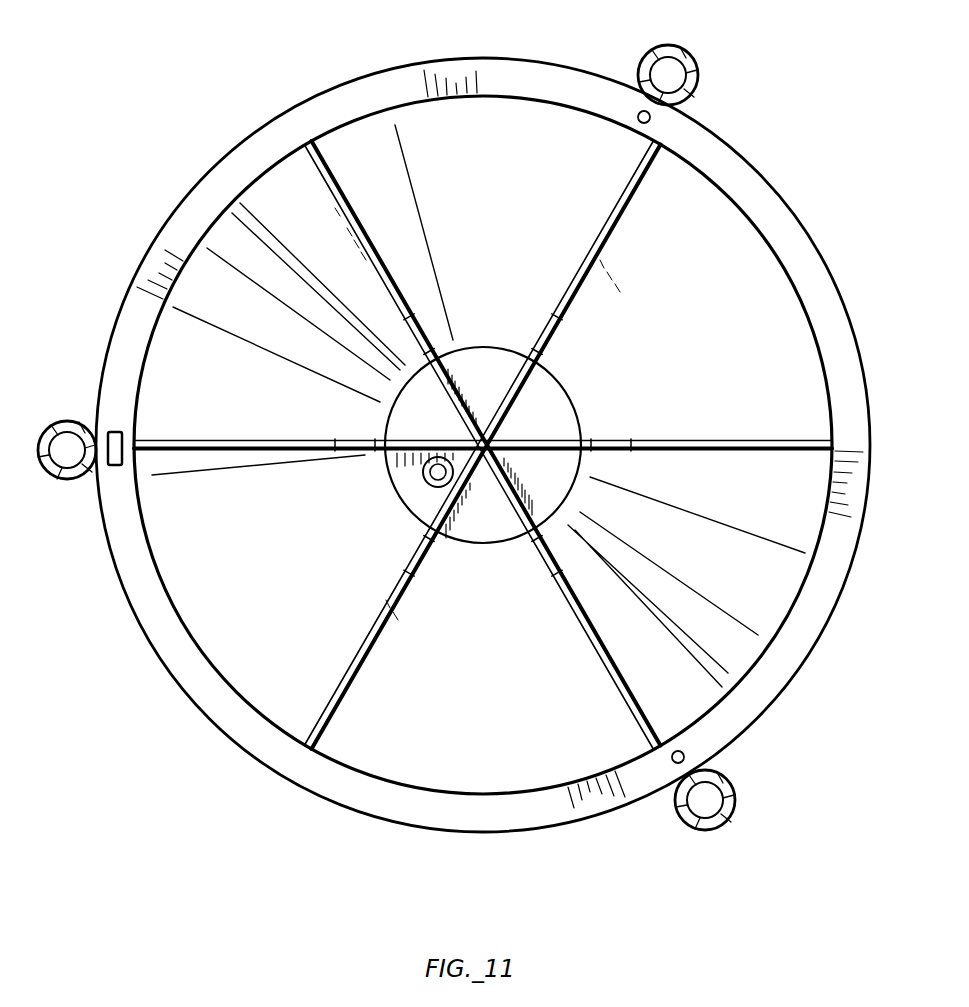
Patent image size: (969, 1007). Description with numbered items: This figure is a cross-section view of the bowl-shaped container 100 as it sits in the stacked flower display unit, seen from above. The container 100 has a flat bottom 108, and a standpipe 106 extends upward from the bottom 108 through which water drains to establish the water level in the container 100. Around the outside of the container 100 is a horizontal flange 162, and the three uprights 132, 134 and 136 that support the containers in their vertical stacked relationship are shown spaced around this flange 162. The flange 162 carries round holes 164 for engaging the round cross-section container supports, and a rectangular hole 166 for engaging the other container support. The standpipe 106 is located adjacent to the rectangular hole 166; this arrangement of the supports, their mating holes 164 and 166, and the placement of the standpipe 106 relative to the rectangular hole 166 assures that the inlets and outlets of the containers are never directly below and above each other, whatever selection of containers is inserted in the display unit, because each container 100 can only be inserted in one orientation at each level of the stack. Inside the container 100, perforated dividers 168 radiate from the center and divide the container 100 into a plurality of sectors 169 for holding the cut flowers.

The container 100 is at (263, 770).
The standpipe 106 is at (425, 480).
The flat bottom 108 is at (558, 397).
The upright 132 is at (78, 480).
The upright 134 is at (733, 782).
The third upright 136 is at (693, 98).
The horizontal flange 162 is at (743, 180).
The round hole 164 is at (640, 114).
The rectangular hole 166 is at (120, 433).
The perforated divider 168 is at (357, 218).
The sector 169 is at (538, 194).